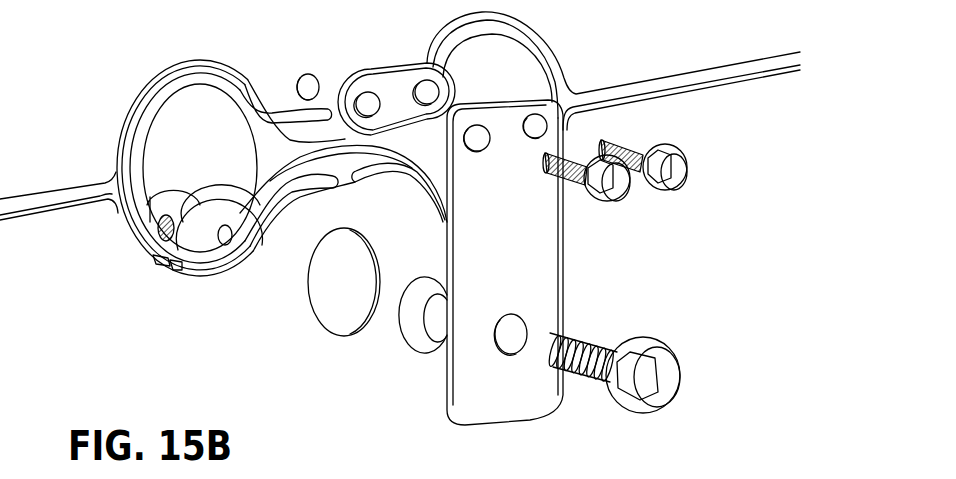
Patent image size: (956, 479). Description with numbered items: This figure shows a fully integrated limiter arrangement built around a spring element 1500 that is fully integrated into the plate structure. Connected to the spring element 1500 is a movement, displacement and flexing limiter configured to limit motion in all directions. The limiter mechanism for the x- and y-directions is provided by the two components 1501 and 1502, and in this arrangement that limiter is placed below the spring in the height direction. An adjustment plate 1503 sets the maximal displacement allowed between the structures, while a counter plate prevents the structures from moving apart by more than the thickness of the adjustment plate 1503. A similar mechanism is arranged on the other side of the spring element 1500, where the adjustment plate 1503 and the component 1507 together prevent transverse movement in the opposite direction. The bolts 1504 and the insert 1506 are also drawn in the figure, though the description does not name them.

The spring element 1500 is at (138, 173).
The limiter mechanism component 1501 is at (377, 297).
The limiter mechanism component 1502 is at (417, 327).
The adjustment plate 1503 is at (395, 98).
The bolts 1504 is at (613, 180).
The insert 1506 is at (219, 205).
The counter plate component 1507 is at (490, 393).